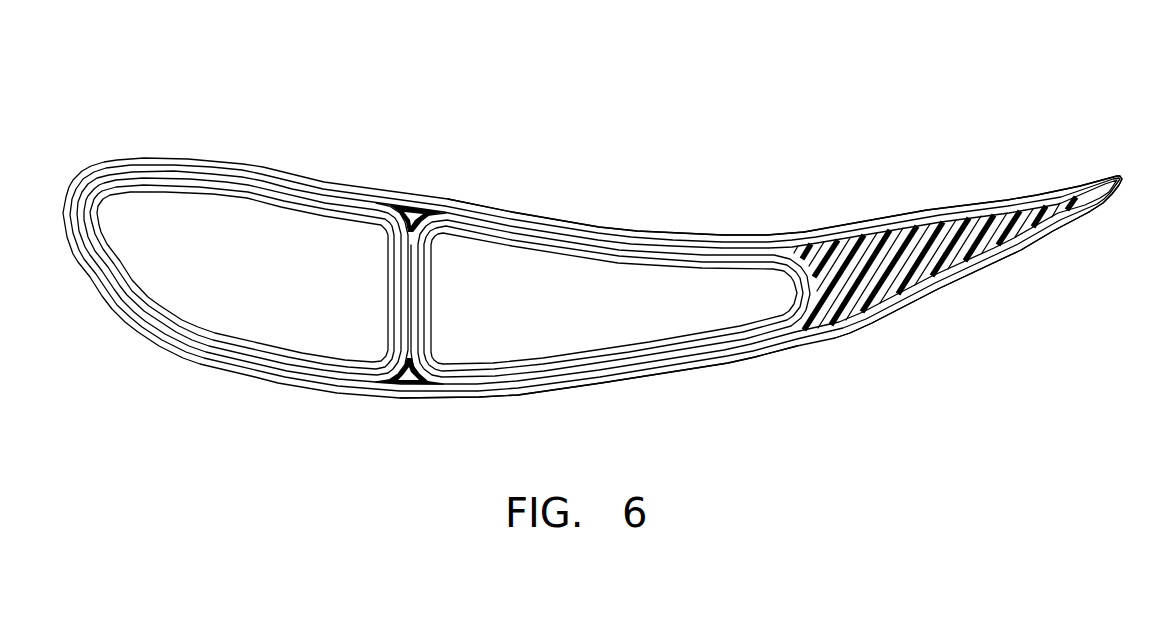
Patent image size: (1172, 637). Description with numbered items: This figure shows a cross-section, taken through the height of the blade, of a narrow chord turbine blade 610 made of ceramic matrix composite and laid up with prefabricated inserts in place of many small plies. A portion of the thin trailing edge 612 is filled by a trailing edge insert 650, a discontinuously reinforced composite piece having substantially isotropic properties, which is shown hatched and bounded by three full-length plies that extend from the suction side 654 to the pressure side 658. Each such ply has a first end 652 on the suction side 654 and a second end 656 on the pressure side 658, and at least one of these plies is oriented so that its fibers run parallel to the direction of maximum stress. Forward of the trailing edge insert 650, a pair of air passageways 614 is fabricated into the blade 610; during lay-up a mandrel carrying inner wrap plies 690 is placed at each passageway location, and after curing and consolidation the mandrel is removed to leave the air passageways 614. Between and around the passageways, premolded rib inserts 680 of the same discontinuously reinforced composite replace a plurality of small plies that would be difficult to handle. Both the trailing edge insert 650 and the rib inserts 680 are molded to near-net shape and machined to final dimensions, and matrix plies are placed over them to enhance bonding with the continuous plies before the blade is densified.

The narrow chord turbine blade 610 is at (912, 64).
The trailing edge 612 is at (1090, 175).
The air passageways 614 is at (310, 294).
The trailing edge insert 650 is at (913, 268).
The first end of full length ply 652 is at (1036, 231).
The suction side 654 is at (722, 370).
The second end of full length ply 656 is at (1033, 190).
The pressure side 658 is at (744, 232).
The rib inserts 680 is at (416, 224).
The inner wrap plies 690 is at (285, 211).